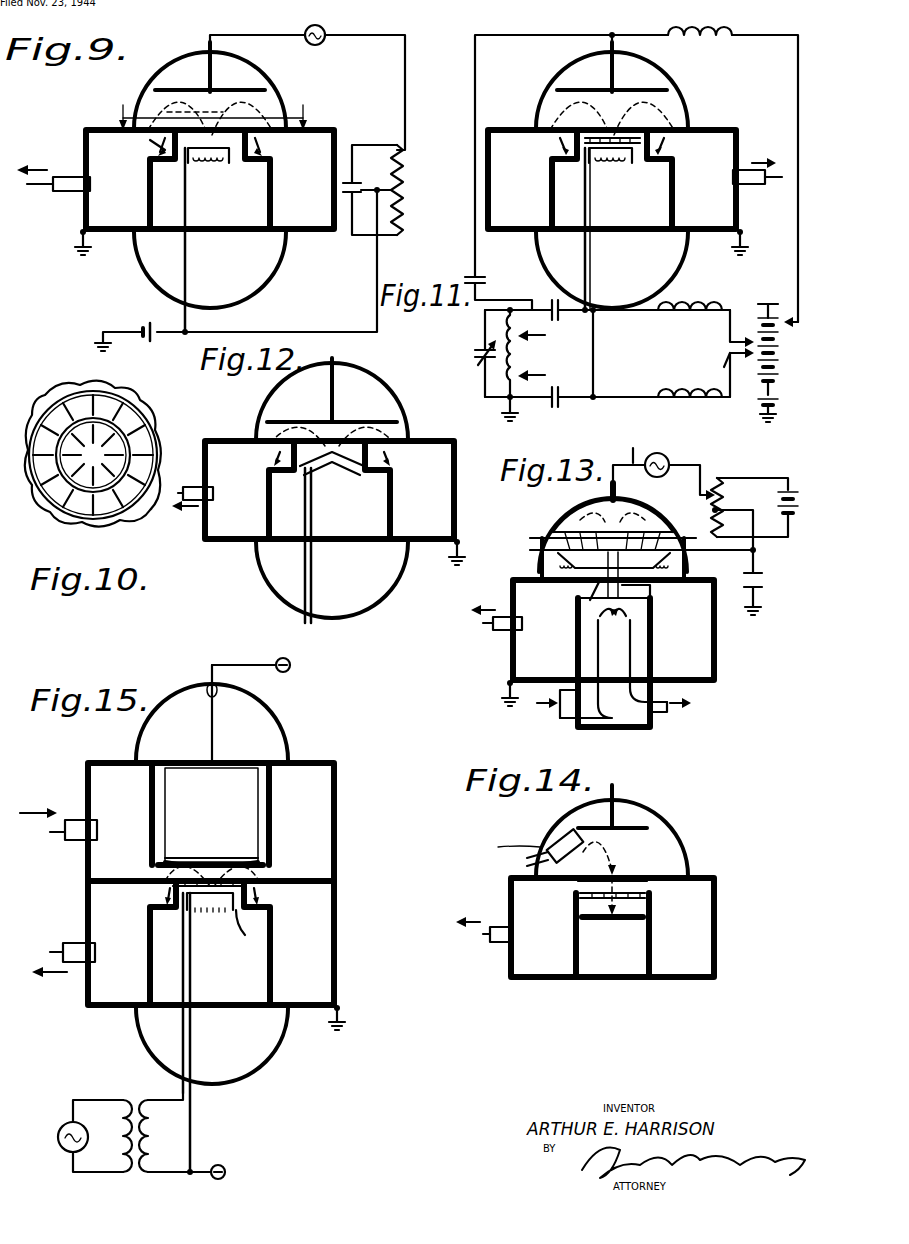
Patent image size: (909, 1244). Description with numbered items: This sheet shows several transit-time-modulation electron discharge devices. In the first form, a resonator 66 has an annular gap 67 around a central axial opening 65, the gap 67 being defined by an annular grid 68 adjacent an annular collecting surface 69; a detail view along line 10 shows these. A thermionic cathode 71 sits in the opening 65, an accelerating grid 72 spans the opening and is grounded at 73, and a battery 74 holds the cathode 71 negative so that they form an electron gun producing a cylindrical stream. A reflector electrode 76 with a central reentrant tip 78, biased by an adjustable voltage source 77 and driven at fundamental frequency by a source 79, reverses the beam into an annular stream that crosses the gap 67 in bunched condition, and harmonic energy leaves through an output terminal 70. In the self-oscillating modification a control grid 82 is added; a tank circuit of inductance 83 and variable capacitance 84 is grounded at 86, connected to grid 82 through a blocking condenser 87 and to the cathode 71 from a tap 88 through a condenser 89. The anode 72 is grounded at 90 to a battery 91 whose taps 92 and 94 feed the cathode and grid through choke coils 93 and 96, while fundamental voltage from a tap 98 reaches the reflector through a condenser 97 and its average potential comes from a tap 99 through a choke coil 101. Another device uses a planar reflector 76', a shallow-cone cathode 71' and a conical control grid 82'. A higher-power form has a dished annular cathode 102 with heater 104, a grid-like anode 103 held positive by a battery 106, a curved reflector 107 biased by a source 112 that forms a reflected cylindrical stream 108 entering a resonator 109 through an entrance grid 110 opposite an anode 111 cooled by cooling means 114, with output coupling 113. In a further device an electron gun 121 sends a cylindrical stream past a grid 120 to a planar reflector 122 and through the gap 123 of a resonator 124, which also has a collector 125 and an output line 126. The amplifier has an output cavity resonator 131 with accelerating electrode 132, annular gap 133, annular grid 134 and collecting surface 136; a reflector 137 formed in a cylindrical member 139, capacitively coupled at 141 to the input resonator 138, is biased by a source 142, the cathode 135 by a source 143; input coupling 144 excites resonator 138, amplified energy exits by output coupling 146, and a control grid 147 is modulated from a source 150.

In FIG. 9, the line 10— 10 is at (214, 111).
In FIG. 9, the central axial opening 65 is at (238, 152).
In FIG. 9, the resonator 66 is at (86, 148).
In FIG. 11, the resonator 66 is at (736, 147).
In FIG. 12, the resonator 66 is at (445, 479).
In FIG. 10, the resonator 66 is at (153, 426).
In FIG. 9, the annular gap 67 is at (150, 147).
In FIG. 9, the annular grid 68 is at (142, 100).
In FIG. 10, the annular grid 68 is at (93, 493).
In FIG. 9, the annular collecting surface 69 is at (170, 158).
In FIG. 9, the output terminal 70 is at (62, 191).
In FIG. 11, the output terminal 70 is at (755, 187).
In FIG. 12, the output terminal 70 is at (185, 486).
In FIG. 9, the cathode 71 is at (207, 240).
In FIG. 11, the cathode 71 is at (608, 229).
In FIG. 9, the accelerating grid 72 is at (240, 116).
In FIG. 11, the accelerating grid 72 is at (552, 119).
In FIG. 10, the accelerating grid 72 is at (58, 509).
In FIG. 9, the ground 73 is at (75, 248).
In FIG. 9, the battery 74 is at (143, 345).
In FIG. 9, the reflector electrode 76 is at (215, 64).
In FIG. 11, the reflector electrode 76 is at (624, 67).
In FIG. 9, the adjustable voltage source 77 is at (292, 240).
In FIG. 9, the central reentrant tip 78 is at (206, 50).
In FIG. 9, the source 79 is at (325, 42).
In FIG. 13, the source 79 is at (668, 459).
In FIG. 11, the control grid 82 is at (655, 115).
In FIG. 11, the inductance 83 is at (520, 354).
In FIG. 11, the variable capacitance 84 is at (470, 353).
In FIG. 11, the ground 86 is at (500, 416).
In FIG. 11, the direct current blocking condenser 87 is at (548, 296).
In FIG. 11, the intermediate adjustable tap 88 is at (546, 374).
In FIG. 11, the blocking condenser 89 is at (555, 408).
In FIG. 11, the ground connection 90 is at (778, 401).
In FIG. 11, the electron-accelerating voltage source 91 is at (790, 354).
In FIG. 11, the adjustable tap 92 is at (738, 372).
In FIG. 11, the radio frequency choke coil 93 is at (703, 411).
In FIG. 11, the variable tap 94 is at (745, 319).
In FIG. 11, the radio frequency choke coil 96 is at (703, 304).
In FIG. 11, the blocking condenser 97 is at (460, 279).
In FIG. 11, the adjustable tap 98 is at (546, 338).
In FIG. 11, the adjustable tap 99 is at (788, 306).
In FIG. 11, the radio frequency choke coil 101 is at (712, 38).
In FIG. 13, the annular cathode 102 is at (686, 561).
In FIG. 13, the accelerating grid-like anode 103 is at (662, 514).
In FIG. 13, the heater means 104 is at (640, 576).
In FIG. 13, the battery 106 is at (768, 586).
In FIG. 13, the curved reflector electrode 107 is at (623, 467).
In FIG. 13, the reflected cylindrical stream 108 is at (580, 597).
In FIG. 13, the resonator 109 is at (705, 647).
In FIG. 13, the entrance grid 110 is at (656, 608).
In FIG. 13, the anode 111 is at (575, 627).
In FIG. 13, the variable biasing source 112 is at (754, 507).
In FIG. 13, the output coupling 113 is at (500, 631).
In FIG. 13, the cooling means 114 is at (635, 729).
In FIG. 14, the grid 120 is at (648, 871).
In FIG. 14, the electron gun 121 is at (555, 836).
In FIG. 14, the planar reflector electrode 122 is at (640, 826).
In FIG. 14, the gap 123 is at (640, 905).
In FIG. 14, the resonator 124 is at (712, 931).
In FIG. 14, the collector 125 is at (576, 915).
In FIG. 14, the output line 126 is at (500, 946).
In FIG. 15, the output cavity resonator 131 is at (334, 941).
In FIG. 15, the central accelerating electrode 132 is at (200, 866).
In FIG. 15, the annular resonator gap 133 is at (262, 889).
In FIG. 15, the annular grid 134 is at (162, 879).
In FIG. 15, the cathode 135 is at (220, 916).
In FIG. 15, the electron-intercepting or collecting surface 136 is at (155, 911).
In FIG. 15, the reflector electrode 137 is at (250, 858).
In FIG. 15, the input resonator 138 is at (336, 823).
In FIG. 15, the cylindrical member 139 is at (265, 760).
In FIG. 15, the capacitive coupling 141 is at (272, 761).
In FIG. 15, the source 142 is at (291, 667).
In FIG. 15, the source 143 is at (224, 1167).
In FIG. 15, the input coupling 144 is at (65, 819).
In FIG. 15, the output coupling 146 is at (68, 944).
In FIG. 15, the control grid 147 is at (244, 945).
In FIG. 15, the source 150 is at (60, 1126).
In FIG. 12, the reflector electrode 76' is at (336, 390).
In FIG. 12, the control grid 82' is at (357, 438).
In FIG. 12, the cathode structure 71' is at (331, 545).